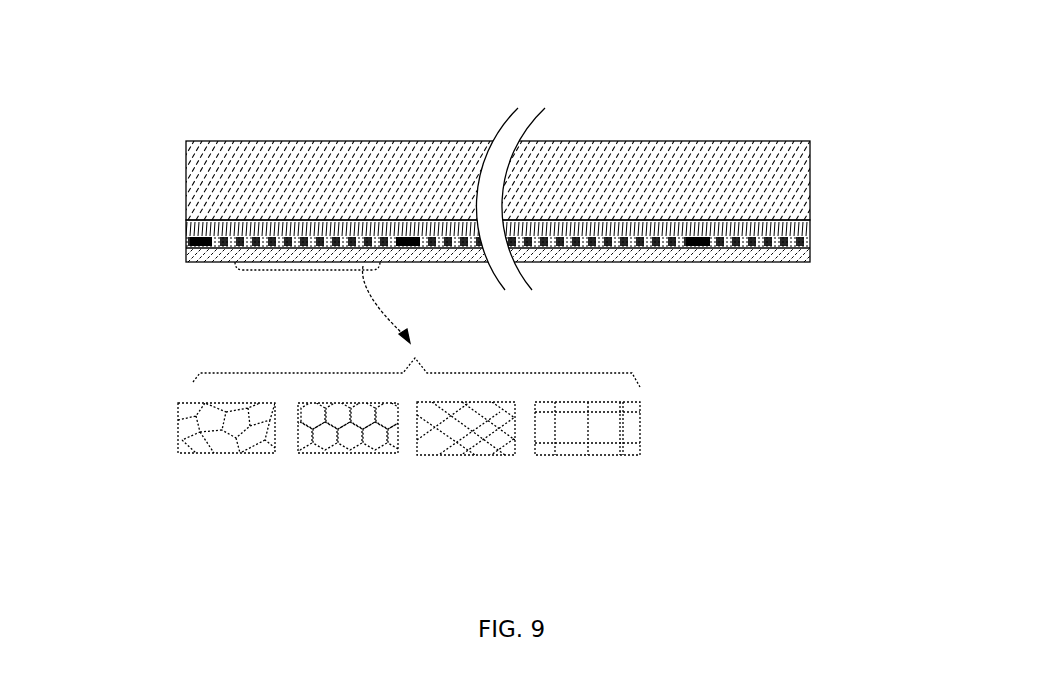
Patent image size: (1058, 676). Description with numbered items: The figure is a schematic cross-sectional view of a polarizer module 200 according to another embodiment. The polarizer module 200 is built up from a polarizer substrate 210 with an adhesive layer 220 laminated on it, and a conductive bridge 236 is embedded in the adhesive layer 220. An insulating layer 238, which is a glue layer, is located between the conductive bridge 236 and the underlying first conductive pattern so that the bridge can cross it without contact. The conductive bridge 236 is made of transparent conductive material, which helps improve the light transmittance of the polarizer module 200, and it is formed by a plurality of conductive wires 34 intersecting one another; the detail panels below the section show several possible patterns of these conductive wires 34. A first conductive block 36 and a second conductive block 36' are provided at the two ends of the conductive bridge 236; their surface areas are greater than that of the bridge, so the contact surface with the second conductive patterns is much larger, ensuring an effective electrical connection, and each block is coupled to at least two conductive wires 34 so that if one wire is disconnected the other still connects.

The polarizer module 200 is at (501, 174).
The polarizer substrate 210 is at (187, 192).
The adhesive layer 220 is at (813, 228).
The first conductive block 36 is at (214, 282).
The second conductive block 36' is at (442, 281).
The conductive bridge 236 is at (260, 270).
The insulating layer 238 is at (695, 262).
The conductive wires 34 is at (203, 430).